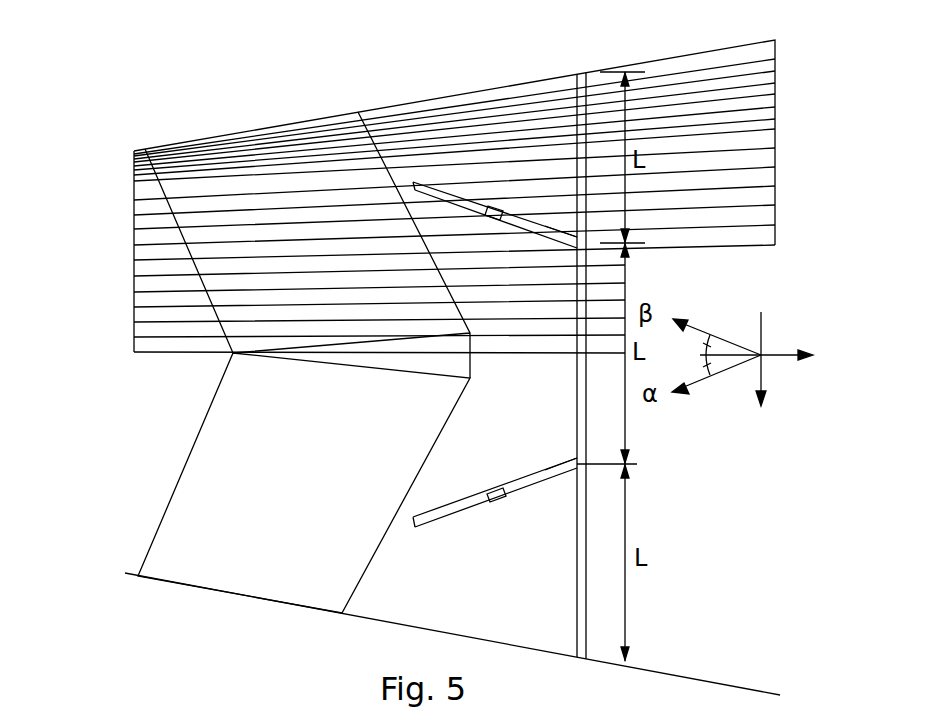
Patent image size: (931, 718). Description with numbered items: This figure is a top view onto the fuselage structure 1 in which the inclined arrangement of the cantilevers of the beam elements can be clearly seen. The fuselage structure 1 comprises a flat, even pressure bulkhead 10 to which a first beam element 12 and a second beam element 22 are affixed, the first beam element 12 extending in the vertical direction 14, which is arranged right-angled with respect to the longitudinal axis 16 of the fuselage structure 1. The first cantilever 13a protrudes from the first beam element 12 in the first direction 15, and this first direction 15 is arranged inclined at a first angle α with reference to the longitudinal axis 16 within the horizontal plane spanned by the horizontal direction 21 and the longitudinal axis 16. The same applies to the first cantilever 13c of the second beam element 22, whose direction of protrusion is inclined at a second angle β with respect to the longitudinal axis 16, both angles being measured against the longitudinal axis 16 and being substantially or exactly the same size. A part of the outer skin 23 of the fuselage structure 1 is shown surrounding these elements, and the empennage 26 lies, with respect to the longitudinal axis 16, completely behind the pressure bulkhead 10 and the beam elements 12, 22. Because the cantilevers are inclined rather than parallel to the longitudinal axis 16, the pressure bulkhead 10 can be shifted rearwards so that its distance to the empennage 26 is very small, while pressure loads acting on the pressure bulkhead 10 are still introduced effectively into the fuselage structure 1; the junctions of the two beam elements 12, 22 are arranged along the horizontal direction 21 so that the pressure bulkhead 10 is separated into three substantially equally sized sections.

The fuselage structure 1 is at (87, 134).
The pressure bulkhead 10 is at (583, 540).
The first beam element 12 is at (557, 470).
The first cantilever 13a is at (450, 510).
The first cantilever 13c is at (445, 195).
The vertical direction 14 is at (720, 342).
The first direction 15 is at (727, 372).
The longitudinal axis 16 is at (785, 348).
The horizontal direction 21 is at (766, 378).
The second beam element 22 is at (548, 235).
The outer skin 23 is at (158, 225).
The empennage 26 is at (247, 580).